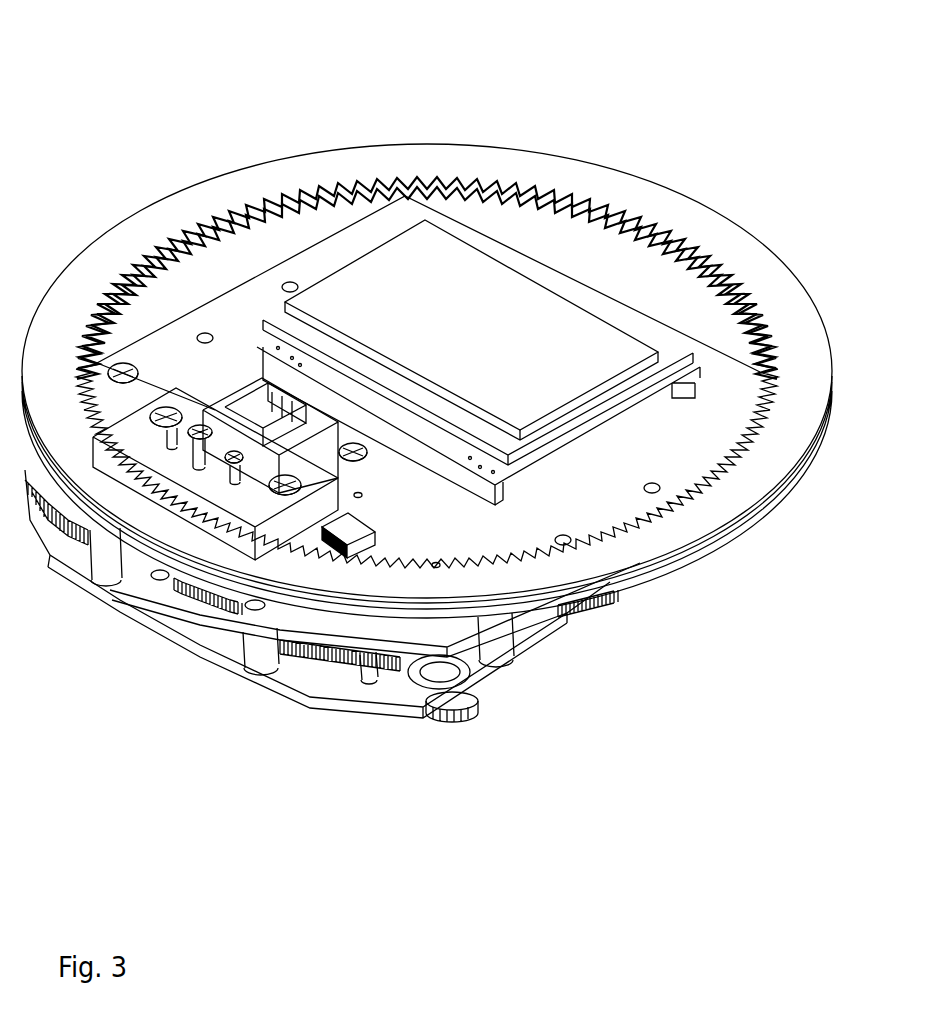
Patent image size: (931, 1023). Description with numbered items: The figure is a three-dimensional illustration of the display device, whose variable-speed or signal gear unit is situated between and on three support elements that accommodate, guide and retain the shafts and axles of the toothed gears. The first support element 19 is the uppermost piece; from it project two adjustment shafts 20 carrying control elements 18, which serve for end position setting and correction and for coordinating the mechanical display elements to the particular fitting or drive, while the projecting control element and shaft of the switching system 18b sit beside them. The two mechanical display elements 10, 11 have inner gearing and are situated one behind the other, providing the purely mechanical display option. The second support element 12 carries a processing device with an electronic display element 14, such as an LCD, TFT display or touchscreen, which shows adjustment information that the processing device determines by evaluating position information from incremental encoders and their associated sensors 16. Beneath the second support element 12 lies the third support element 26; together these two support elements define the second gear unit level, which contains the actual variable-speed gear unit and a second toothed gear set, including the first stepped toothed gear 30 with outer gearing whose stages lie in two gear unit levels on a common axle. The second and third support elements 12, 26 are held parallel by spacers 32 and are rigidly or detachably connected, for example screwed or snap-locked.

The mechanical display element 10 is at (507, 582).
The mechanical display element 11 is at (653, 585).
The second support element 12 is at (318, 262).
The electronic display element 14 is at (512, 300).
The sensor 16 is at (350, 527).
The control element 18 is at (173, 403).
The switching system 18b is at (198, 425).
The first support element 19 is at (135, 473).
The adjustment shaft 20 is at (172, 443).
The third support element 26 is at (396, 712).
The first stepped toothed gear 30 is at (477, 713).
The spacer 32 is at (110, 557).